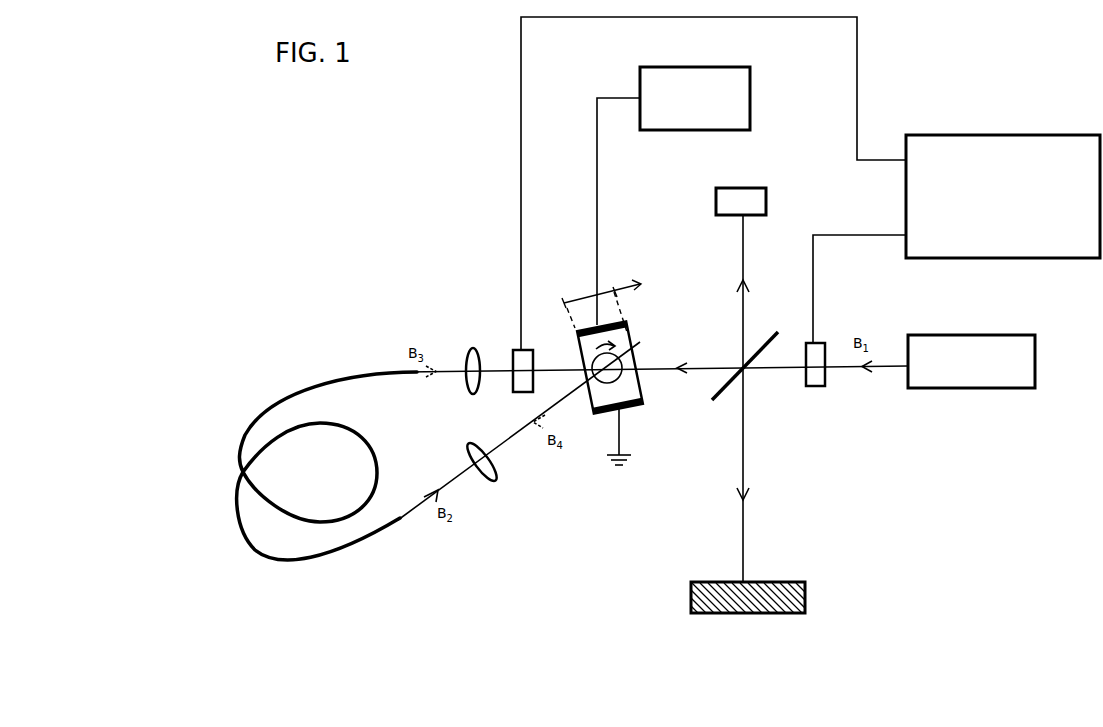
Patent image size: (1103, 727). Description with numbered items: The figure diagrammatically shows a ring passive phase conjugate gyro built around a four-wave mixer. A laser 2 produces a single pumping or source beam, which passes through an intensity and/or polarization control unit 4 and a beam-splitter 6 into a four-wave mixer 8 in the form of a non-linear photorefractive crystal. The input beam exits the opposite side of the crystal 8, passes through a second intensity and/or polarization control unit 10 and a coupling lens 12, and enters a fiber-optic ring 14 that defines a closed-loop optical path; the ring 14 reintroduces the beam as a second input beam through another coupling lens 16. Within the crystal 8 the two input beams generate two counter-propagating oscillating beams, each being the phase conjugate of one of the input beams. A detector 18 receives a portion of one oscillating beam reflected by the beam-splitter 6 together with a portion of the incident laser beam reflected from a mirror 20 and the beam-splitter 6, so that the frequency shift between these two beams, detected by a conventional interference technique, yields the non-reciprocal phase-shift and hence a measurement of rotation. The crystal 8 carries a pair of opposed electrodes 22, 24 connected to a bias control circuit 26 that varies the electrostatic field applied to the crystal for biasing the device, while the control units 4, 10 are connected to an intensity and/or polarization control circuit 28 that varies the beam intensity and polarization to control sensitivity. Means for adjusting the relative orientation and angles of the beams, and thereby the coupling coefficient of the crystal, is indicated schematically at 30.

The laser 2 is at (984, 336).
The intensity and/or polarization control unit 4 is at (826, 383).
The beam-splitter 6 is at (715, 402).
The four-wave mixer 8 is at (601, 366).
The intensity and/or polarization control unit 10 is at (514, 350).
The coupling lens 12 is at (466, 352).
The fiber-optic ring 14 is at (240, 428).
The coupling lens 16 is at (497, 479).
The detector 18 is at (756, 186).
The mirror 20 is at (808, 596).
The electrode 22 is at (580, 330).
The electrode 24 is at (631, 406).
The bias control circuit 26 is at (738, 66).
The intensity and/or polarization control circuit 28 is at (1052, 133).
The beam orientation adjustment means 30 is at (618, 354).